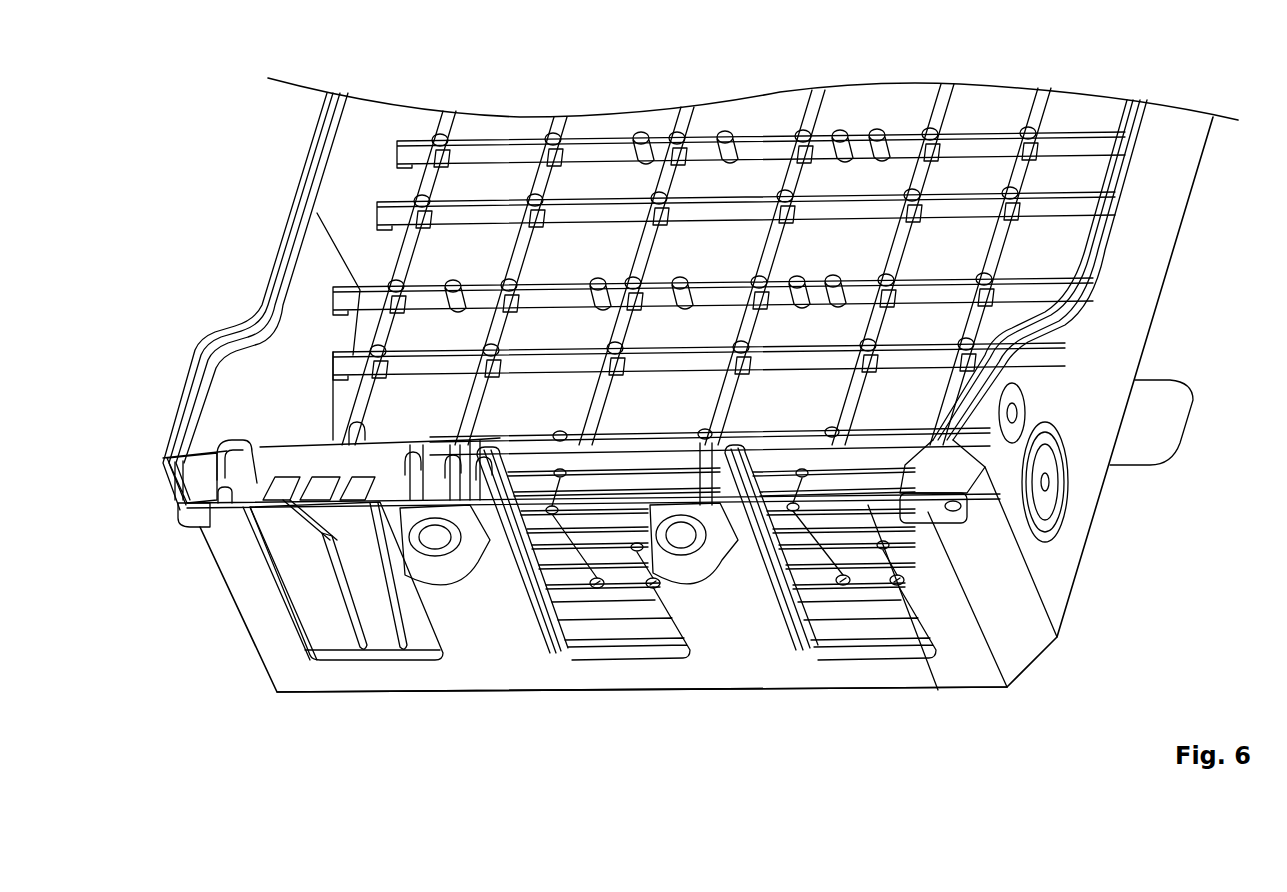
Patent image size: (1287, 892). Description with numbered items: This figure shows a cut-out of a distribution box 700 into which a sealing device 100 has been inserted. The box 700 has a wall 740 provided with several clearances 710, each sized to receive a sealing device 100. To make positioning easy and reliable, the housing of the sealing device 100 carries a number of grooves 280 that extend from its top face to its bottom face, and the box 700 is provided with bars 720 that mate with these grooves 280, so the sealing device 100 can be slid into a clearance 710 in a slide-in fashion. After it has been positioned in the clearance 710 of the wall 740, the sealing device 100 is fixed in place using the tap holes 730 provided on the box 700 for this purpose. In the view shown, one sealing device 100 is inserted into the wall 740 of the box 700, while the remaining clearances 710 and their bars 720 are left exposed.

The distribution box 700 is at (238, 136).
The sealing device 100 is at (318, 623).
The grooves 280 is at (232, 442).
The clearances 710 is at (301, 455).
The bars 720 is at (170, 468).
The tap hole 730 is at (640, 595).
The wall 740 is at (588, 673).